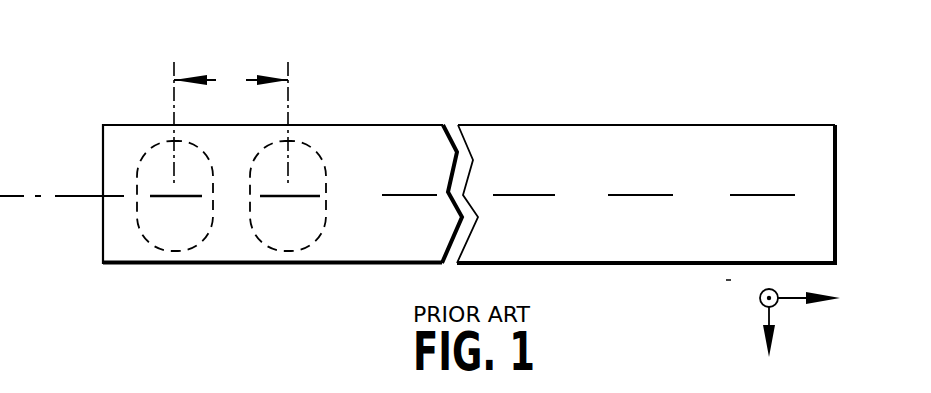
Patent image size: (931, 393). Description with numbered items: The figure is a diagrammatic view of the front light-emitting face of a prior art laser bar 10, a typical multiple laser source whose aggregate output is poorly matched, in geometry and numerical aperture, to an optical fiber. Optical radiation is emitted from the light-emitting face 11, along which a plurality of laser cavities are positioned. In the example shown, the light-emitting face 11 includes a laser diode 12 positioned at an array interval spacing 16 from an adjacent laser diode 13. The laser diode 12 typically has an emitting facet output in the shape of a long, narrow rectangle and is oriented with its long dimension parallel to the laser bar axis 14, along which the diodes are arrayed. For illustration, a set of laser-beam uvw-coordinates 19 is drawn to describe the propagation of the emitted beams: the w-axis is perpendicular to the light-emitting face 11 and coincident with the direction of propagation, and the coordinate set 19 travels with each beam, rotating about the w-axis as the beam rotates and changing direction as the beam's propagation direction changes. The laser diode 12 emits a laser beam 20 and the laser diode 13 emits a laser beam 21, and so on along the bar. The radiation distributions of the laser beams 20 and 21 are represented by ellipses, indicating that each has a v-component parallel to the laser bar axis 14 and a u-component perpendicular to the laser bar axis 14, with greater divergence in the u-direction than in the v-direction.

The laser bar 10 is at (620, 42).
The light-emitting face 11 is at (778, 138).
The laser diode 12 is at (187, 199).
The laser diode 13 is at (303, 199).
The laser bar axis 14 is at (21, 196).
The array interval spacing 16 is at (231, 122).
The laser-beam uvw-coordinates 19 is at (750, 315).
The laser beam 20 is at (166, 249).
The laser beam 21 is at (306, 249).